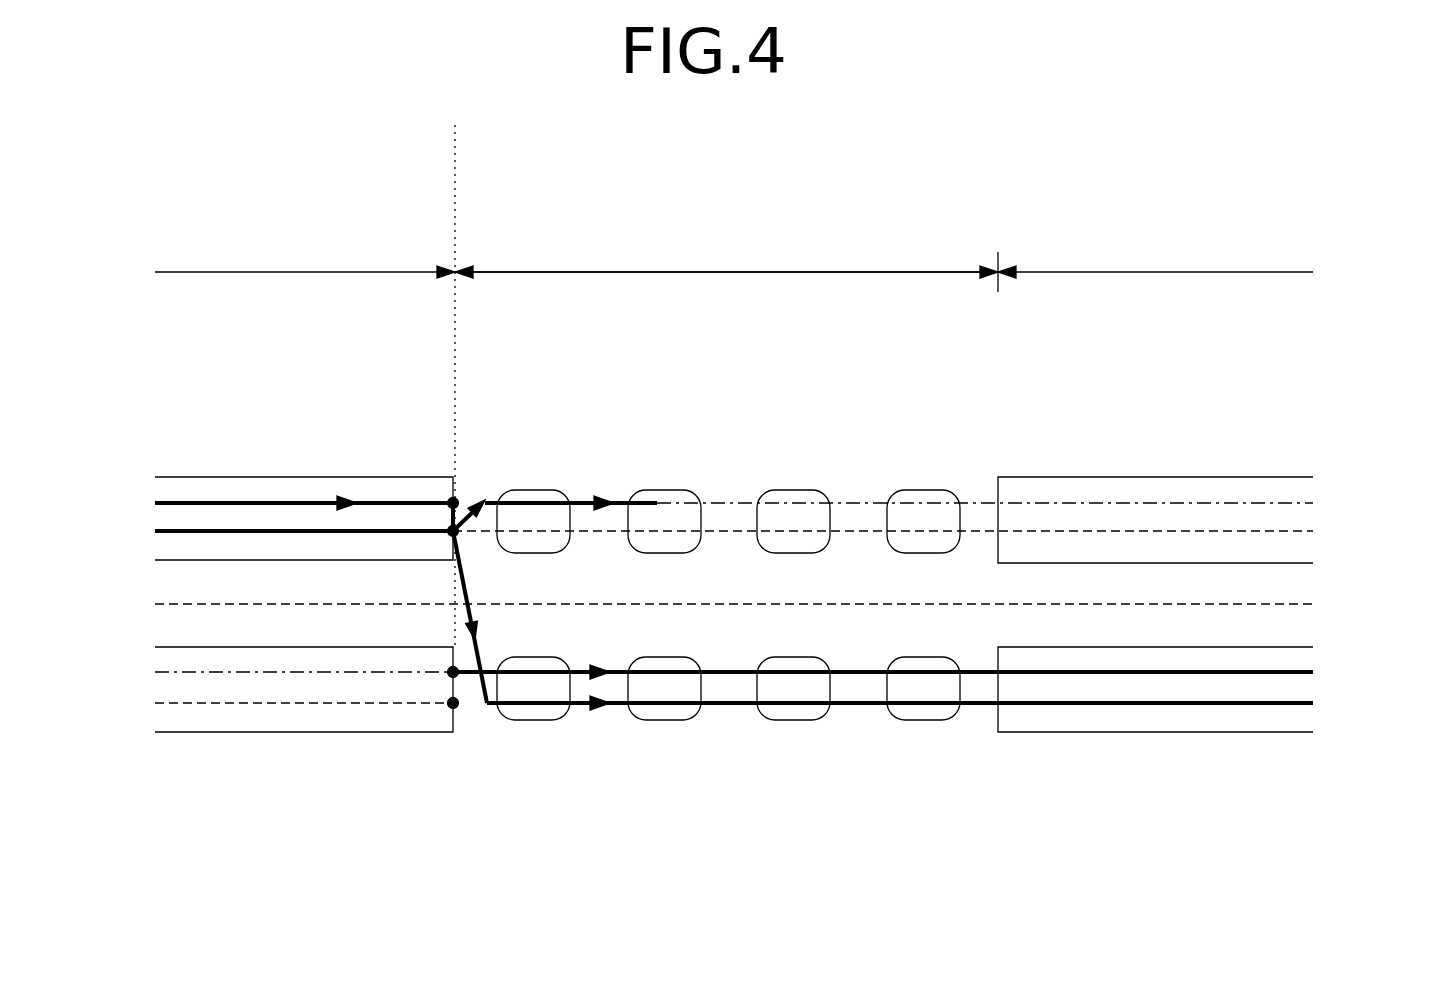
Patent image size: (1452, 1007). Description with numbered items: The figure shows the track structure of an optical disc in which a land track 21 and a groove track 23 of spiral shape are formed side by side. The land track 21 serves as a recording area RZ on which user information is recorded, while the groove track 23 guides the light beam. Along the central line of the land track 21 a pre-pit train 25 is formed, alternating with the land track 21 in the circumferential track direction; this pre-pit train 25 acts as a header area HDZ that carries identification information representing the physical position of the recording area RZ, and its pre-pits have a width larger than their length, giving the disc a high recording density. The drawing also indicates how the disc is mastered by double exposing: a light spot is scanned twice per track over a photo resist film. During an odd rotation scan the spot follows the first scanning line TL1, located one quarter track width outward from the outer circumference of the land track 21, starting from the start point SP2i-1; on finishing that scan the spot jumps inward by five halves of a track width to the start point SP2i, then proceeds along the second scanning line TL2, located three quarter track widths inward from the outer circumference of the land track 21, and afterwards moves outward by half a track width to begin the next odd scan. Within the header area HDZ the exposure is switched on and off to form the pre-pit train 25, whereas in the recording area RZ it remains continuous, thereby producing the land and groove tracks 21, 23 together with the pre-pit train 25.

The land track 21 is at (318, 477).
The groove track 23 is at (318, 593).
The pre-pit train 25 is at (803, 463).
The first scanning line TL1 is at (195, 668).
The second scanning line TL2 is at (198, 705).
The 2ith start point SP2i is at (455, 708).
The 2i-1th start point SP2i-1 is at (457, 676).
The recording area RZ is at (734, 385).
The header area HDZ is at (726, 254).